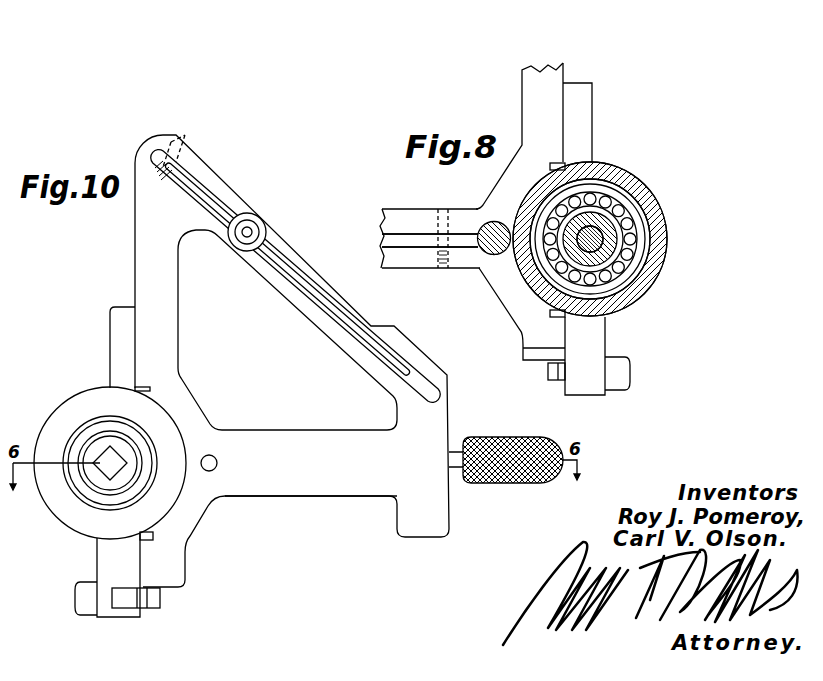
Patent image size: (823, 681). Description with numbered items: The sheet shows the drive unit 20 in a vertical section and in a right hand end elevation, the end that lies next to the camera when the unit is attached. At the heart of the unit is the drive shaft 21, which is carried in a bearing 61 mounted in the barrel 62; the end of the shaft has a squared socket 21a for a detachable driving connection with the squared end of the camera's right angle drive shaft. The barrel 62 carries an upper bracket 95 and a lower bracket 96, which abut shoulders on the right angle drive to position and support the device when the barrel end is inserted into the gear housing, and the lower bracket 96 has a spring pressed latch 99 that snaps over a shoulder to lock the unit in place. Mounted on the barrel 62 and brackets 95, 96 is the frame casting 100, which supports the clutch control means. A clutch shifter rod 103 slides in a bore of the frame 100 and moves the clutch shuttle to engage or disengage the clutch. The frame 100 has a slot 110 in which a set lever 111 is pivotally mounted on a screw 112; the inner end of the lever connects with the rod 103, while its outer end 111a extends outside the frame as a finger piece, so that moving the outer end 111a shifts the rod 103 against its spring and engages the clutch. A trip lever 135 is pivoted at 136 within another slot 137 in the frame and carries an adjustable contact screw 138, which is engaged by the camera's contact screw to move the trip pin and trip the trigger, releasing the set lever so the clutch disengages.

In FIG. 10, the drive unit 20 is at (233, 503).
In FIG. 8, the drive shaft 21 is at (617, 247).
In FIG. 10, the squared socket 21a is at (97, 477).
In FIG. 8, the bearing 61 is at (643, 230).
In FIG. 10, the barrel 62 is at (65, 400).
In FIG. 8, the barrel 62 is at (653, 212).
In FIG. 10, the upper bracket 95 is at (120, 322).
In FIG. 8, the upper bracket 95 is at (580, 110).
In FIG. 10, the lower bracket 96 is at (112, 555).
In FIG. 8, the lower bracket 96 is at (598, 333).
In FIG. 10, the spring pressed latch 99 is at (155, 602).
In FIG. 8, the spring pressed latch 99 is at (560, 380).
In FIG. 10, the frame casting 100 is at (286, 428).
In FIG. 8, the frame casting 100 is at (496, 310).
In FIG. 8, the clutch shifter rod 103 is at (490, 253).
In FIG. 8, the slot 110 is at (407, 242).
In FIG. 8, the set lever 111 is at (417, 242).
In FIG. 10, the outer end of set lever 111a is at (498, 445).
In FIG. 8, the screw 112 is at (443, 208).
In FIG. 10, the trip lever 135 is at (296, 273).
In FIG. 10, the pivot of trip lever 136 is at (170, 157).
In FIG. 10, the slot 137 is at (362, 275).
In FIG. 10, the adjustable contact screw 138 is at (249, 228).